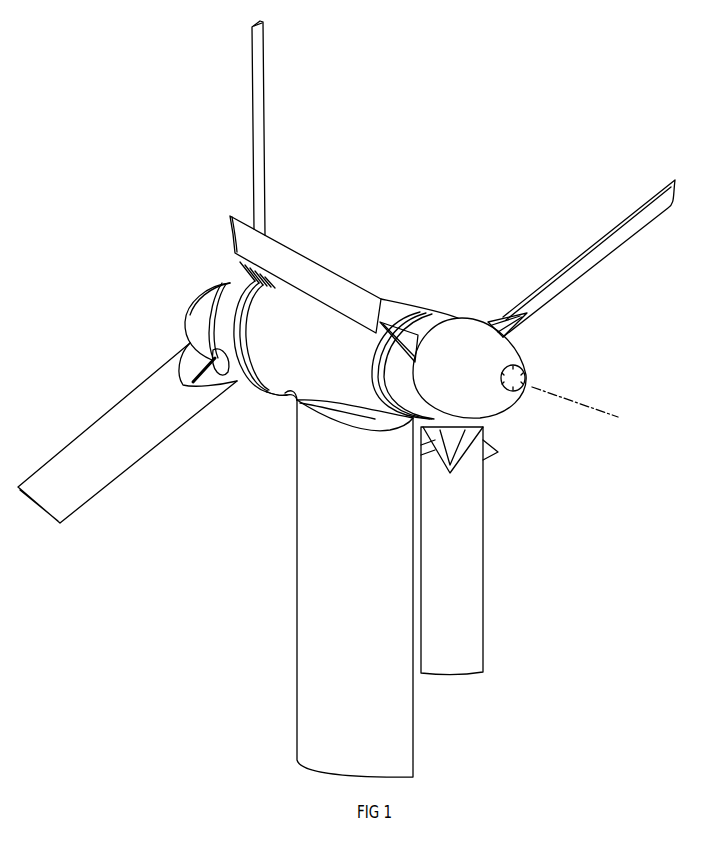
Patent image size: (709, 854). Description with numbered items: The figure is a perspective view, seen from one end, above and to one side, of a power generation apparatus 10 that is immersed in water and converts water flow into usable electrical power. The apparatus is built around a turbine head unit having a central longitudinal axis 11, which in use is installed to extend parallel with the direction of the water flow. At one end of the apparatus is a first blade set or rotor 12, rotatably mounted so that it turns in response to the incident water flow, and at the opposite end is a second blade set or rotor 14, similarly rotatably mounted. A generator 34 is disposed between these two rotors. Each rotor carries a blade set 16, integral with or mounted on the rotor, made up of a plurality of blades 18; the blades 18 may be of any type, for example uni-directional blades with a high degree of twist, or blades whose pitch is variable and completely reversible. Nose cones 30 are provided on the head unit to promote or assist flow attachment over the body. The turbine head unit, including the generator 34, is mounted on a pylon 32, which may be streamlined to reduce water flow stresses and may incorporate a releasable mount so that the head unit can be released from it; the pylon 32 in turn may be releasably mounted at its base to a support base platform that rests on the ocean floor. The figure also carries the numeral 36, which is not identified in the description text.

The power generation apparatus 10 is at (398, 290).
The central longitudinal axis 11 is at (625, 418).
The first blade set or rotor 12 is at (507, 413).
The second blade set or rotor 14 is at (180, 328).
The blade set 16 is at (92, 512).
The blade 18 is at (582, 248).
The nose cone 30 is at (203, 290).
The pylon 32 is at (294, 610).
The generator 34 is at (270, 393).
The fin 36 is at (490, 320).